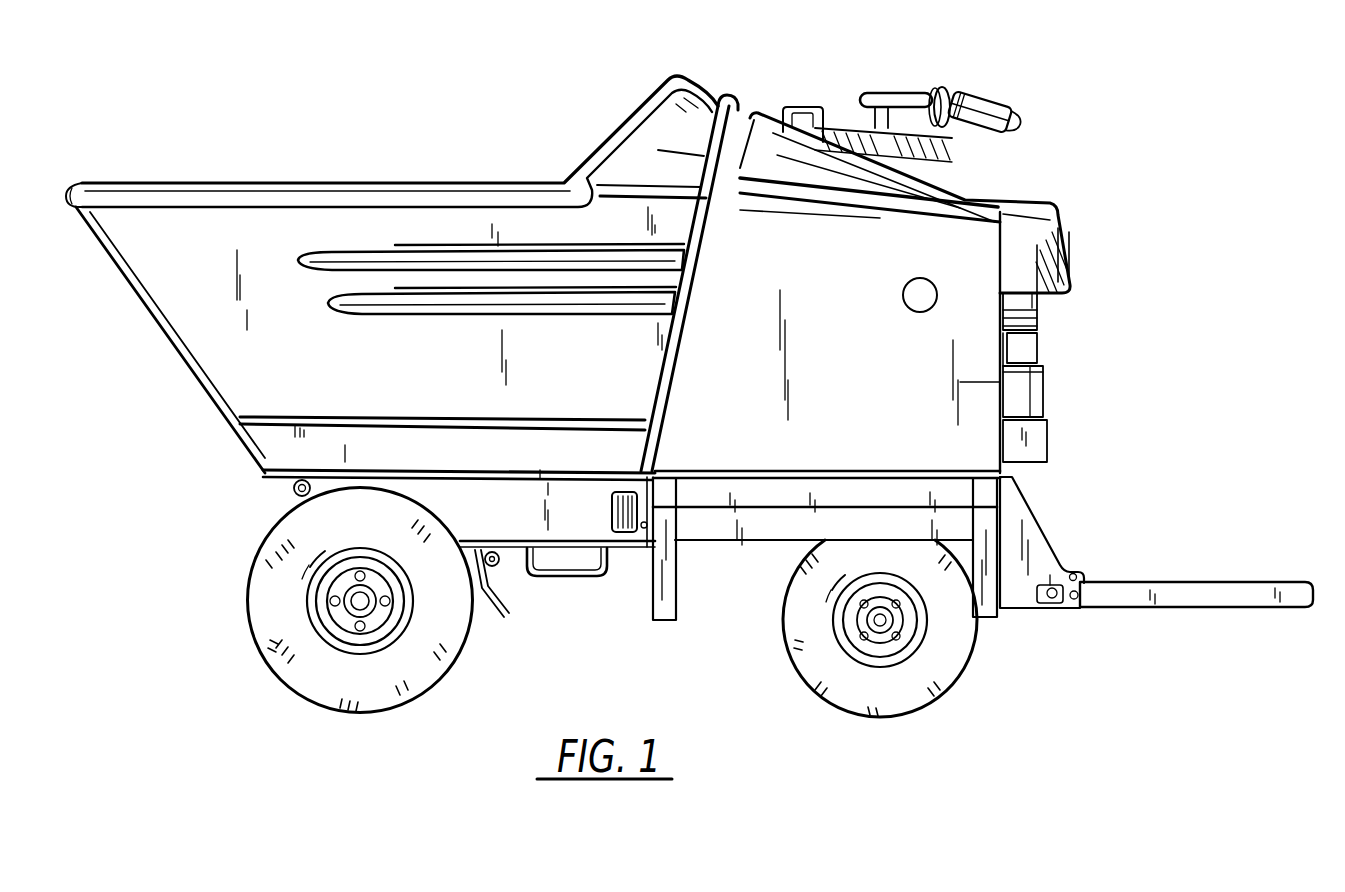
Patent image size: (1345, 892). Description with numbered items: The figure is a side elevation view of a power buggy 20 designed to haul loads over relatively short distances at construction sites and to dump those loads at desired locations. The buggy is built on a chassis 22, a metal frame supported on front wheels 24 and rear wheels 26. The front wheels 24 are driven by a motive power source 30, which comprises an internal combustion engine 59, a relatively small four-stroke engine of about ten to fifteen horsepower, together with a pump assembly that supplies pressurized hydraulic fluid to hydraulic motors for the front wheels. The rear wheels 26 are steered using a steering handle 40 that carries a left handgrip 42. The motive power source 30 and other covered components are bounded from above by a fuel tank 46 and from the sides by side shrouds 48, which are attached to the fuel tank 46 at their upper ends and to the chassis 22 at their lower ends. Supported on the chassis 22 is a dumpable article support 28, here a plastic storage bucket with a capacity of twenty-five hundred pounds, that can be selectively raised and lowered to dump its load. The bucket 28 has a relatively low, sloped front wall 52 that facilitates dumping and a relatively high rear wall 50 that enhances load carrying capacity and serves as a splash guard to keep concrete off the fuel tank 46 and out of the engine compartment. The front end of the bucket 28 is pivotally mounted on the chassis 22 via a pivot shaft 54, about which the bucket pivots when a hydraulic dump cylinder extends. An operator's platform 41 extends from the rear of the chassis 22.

The power buggy 20 is at (414, 102).
The chassis 22 is at (761, 540).
The front wheels 24 is at (256, 630).
The rear wheels 26 is at (938, 696).
The dumpable article support 28 is at (273, 179).
The motive power source 30 is at (1024, 343).
The steering handle 40 is at (904, 83).
The operator's platform 41 is at (1284, 578).
The left handgrip 42 is at (986, 96).
The fuel tank 46 is at (994, 178).
The side shrouds 48 is at (1006, 382).
The rear wall 50 is at (740, 102).
The front wall 52 is at (196, 367).
The pivot shaft 54 is at (292, 495).
The internal combustion engine 59 is at (1012, 357).